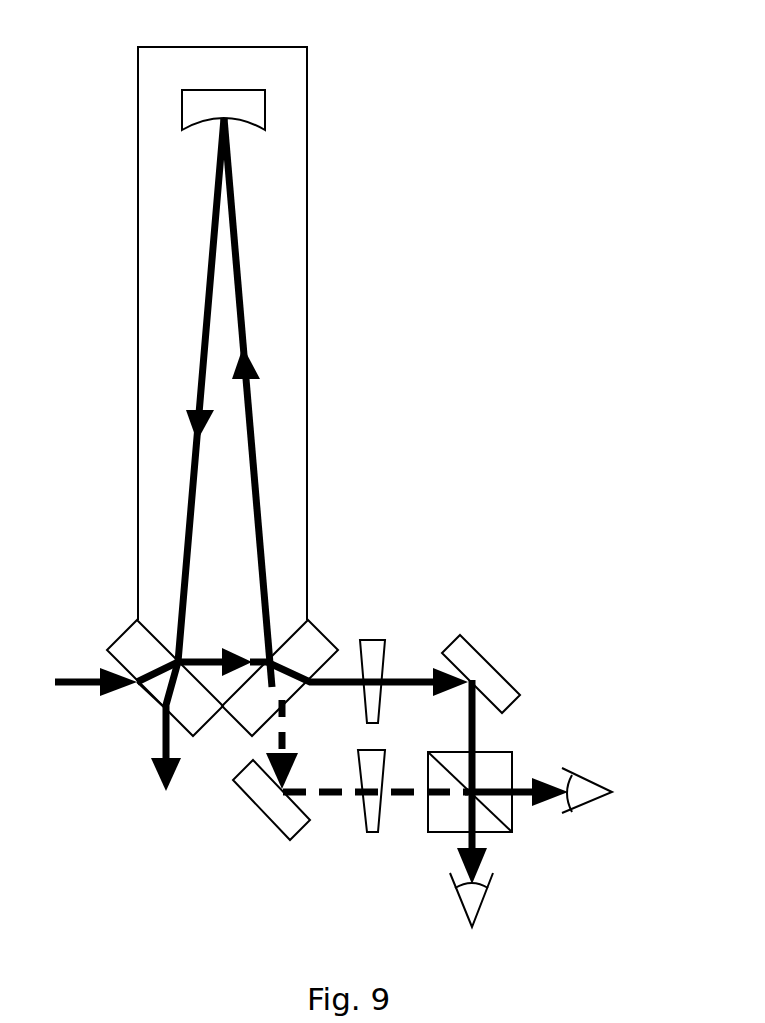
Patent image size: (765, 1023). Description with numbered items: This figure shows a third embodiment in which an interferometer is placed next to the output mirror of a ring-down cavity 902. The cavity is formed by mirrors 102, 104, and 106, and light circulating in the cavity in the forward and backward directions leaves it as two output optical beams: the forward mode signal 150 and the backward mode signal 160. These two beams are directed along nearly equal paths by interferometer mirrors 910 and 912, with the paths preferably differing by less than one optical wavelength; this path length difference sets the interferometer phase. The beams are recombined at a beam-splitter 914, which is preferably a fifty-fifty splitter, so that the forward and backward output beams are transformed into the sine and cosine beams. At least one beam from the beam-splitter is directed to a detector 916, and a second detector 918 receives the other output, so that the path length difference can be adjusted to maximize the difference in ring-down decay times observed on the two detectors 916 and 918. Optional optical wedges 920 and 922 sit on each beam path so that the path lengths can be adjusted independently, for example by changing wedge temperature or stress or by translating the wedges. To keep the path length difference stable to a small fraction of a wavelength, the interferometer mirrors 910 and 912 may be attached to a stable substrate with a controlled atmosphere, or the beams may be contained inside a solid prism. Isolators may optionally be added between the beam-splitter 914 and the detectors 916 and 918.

The ring-down cavity 902 is at (138, 116).
The mirror 106 is at (267, 103).
The mirror 102 is at (124, 632).
The mirror 104 is at (318, 626).
The optical wedge 920 is at (380, 642).
The interferometer mirror 912 is at (488, 658).
The forward mode signal 150 is at (477, 723).
The beam-splitter 914 is at (500, 833).
The detector 916 is at (605, 795).
The detector 918 is at (480, 917).
The interferometer mirror 910 is at (272, 818).
The backward mode signal 160 is at (325, 795).
The optical wedge 922 is at (372, 832).